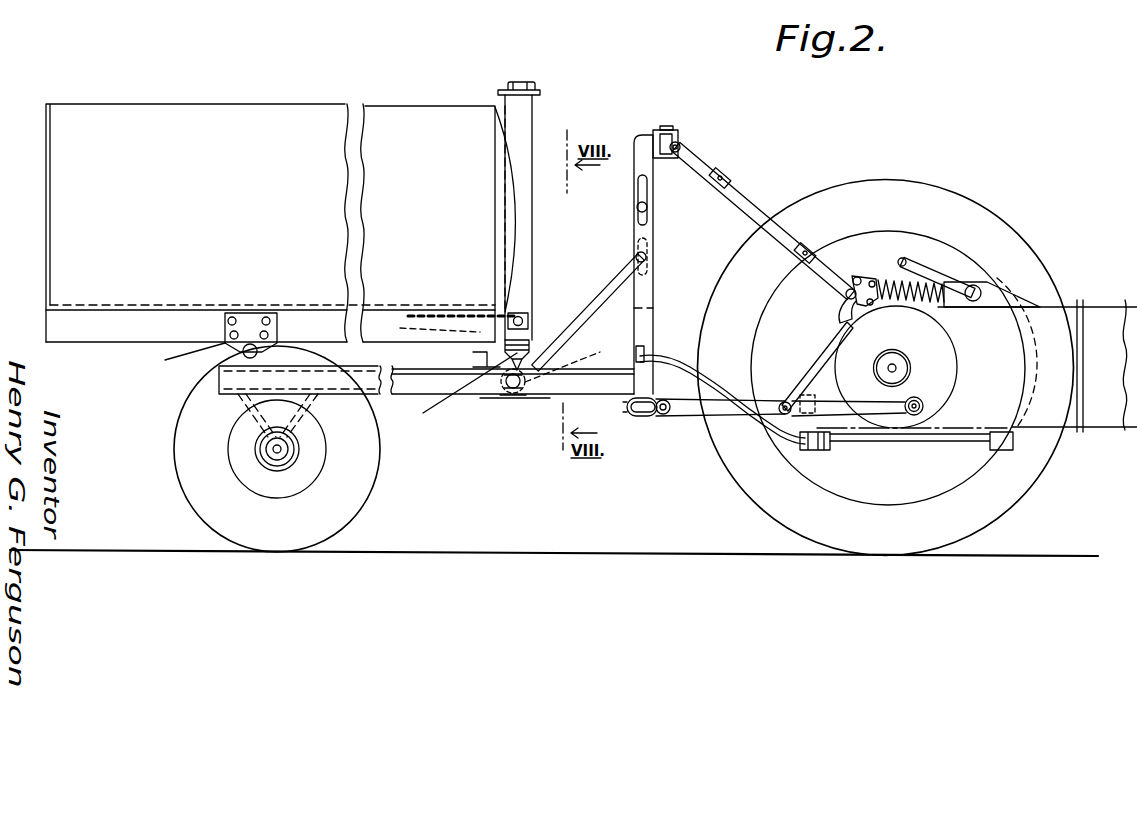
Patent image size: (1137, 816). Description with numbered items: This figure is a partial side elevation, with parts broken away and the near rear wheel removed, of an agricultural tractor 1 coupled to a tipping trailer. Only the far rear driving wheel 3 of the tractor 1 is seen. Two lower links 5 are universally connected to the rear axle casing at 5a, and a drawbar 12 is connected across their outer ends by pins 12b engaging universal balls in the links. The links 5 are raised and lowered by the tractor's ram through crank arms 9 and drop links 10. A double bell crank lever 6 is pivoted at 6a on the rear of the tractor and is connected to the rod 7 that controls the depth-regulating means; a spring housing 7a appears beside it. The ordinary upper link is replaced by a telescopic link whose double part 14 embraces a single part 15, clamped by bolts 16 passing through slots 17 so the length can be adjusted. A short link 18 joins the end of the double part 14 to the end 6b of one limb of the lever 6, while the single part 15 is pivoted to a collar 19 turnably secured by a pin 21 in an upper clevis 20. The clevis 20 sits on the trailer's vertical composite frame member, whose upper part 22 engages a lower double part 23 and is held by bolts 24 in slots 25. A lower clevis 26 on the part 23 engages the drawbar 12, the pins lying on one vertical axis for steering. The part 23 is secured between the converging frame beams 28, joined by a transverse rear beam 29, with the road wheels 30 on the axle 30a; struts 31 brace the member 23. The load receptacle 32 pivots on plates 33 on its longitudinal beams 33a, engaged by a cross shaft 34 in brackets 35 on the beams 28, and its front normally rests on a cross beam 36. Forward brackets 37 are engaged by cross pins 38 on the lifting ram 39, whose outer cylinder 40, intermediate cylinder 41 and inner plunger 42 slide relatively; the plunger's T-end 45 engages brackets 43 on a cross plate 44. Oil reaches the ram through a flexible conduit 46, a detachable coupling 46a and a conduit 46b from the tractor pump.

The agricultural tractor 1 is at (1090, 320).
The rear driving wheel 3 is at (942, 183).
The lower link 5 is at (731, 410).
The universal connection of lower links 5a is at (923, 406).
The double bell crank lever 6 is at (874, 283).
The pivot of bell crank lever 6a is at (872, 306).
The upper link connection end of bell crank lever 6b is at (856, 277).
The rod 7 is at (928, 282).
The spring housing 7a is at (950, 300).
The crank arm 9 is at (930, 265).
The drop link 10 is at (802, 388).
The drawbar 12 is at (641, 418).
The drawbar pin 12b is at (665, 416).
The double part of telescopic link 14 is at (805, 228).
The single part of telescopic link 15 is at (700, 152).
The clamping bolt 16 is at (733, 180).
The slot 17 is at (742, 183).
The short link 18 is at (846, 300).
The collar 19 is at (682, 146).
The upper clevis 20 is at (668, 126).
The pin 21 is at (678, 140).
The upper part of vertical frame member 22 is at (640, 138).
The lower double part of vertical frame member 23 is at (645, 300).
The bolt 24 is at (648, 207).
The slot 25 is at (638, 180).
The lower clevis 26 is at (632, 418).
The frame beam 28 is at (605, 385).
The transverse rear beam 29 is at (291, 404).
The road wheel 30 is at (355, 492).
The axle 30a is at (277, 454).
The strut 31 is at (608, 290).
The load receptacle 32 is at (276, 118).
The plate 33 is at (225, 344).
The longitudinal beam 33a is at (105, 305).
The cross shaft 34 is at (250, 354).
The bracket 35 is at (273, 345).
The cross beam 36 is at (464, 395).
The forwardly projecting bracket 37 is at (522, 318).
The cross pin 38 is at (487, 353).
The lifting ram 39 is at (530, 130).
The outer cylinder 40 is at (533, 272).
The intermediate cylinder 41 is at (530, 352).
The inner plunger 42 is at (511, 383).
The bracket 43 is at (521, 392).
The cross plate 44 is at (512, 388).
The T-end 45 is at (562, 362).
The flexible conduit 46 is at (668, 358).
The detachable coupling 46a is at (812, 448).
The conduit 46b is at (895, 445).